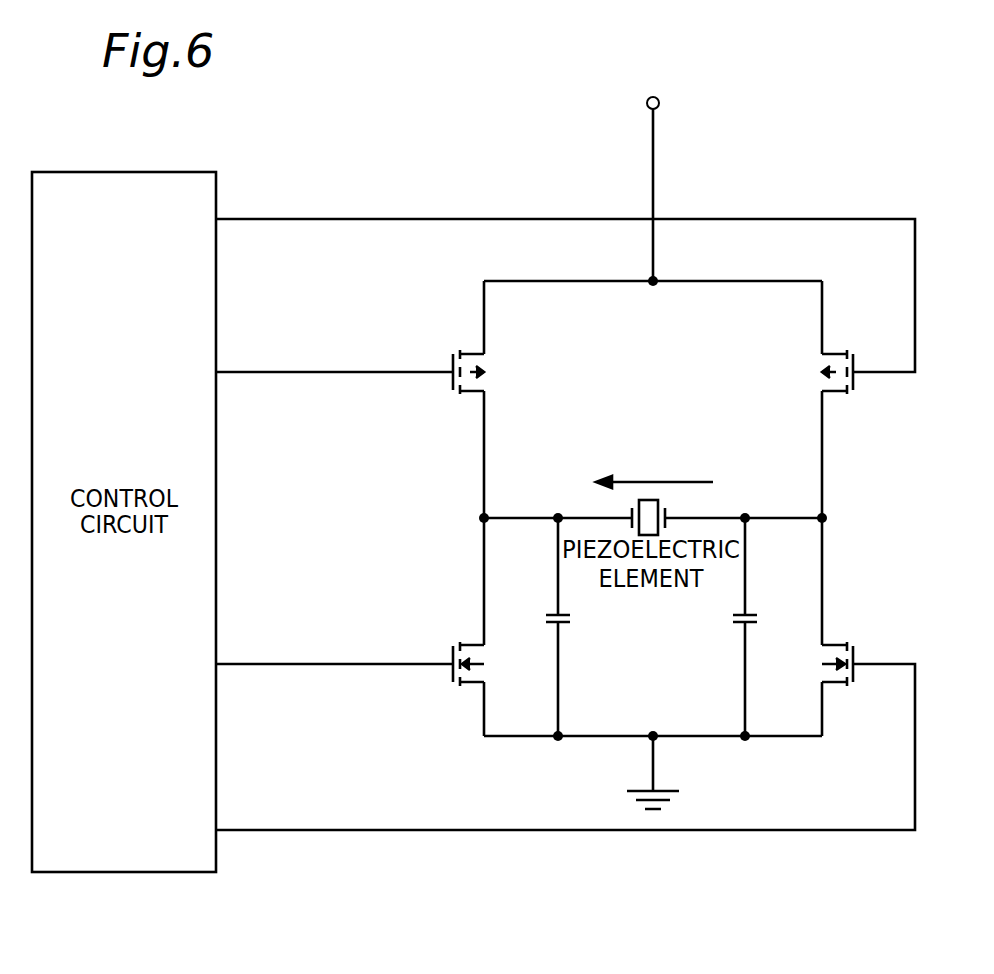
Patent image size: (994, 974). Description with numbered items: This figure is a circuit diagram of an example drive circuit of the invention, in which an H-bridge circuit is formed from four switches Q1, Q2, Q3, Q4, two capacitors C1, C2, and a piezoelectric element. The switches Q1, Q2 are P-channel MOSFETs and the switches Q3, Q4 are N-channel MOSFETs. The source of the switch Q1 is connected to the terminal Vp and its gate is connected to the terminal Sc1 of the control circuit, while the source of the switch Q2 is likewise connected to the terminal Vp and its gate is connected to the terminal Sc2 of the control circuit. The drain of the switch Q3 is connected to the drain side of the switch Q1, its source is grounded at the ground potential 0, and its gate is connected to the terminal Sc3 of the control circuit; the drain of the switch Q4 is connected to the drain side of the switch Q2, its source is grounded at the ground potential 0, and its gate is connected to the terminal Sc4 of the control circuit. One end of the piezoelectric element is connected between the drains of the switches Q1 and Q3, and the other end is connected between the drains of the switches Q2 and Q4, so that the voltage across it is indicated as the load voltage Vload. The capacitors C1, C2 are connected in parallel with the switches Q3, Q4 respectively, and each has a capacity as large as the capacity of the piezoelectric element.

The switch Q1 is at (453, 356).
The switch Q2 is at (853, 352).
The switch Q3 is at (453, 680).
The switch Q4 is at (853, 680).
The capacitor C1 is at (579, 627).
The capacitor C2 is at (727, 627).
The terminal Sc1 is at (334, 354).
The terminal Sc2 is at (565, 278).
The terminal Sc3 is at (334, 646).
The terminal Sc4 is at (565, 747).
The terminal Vp is at (677, 184).
The load voltage Vload is at (654, 466).
The ground 0 is at (659, 775).